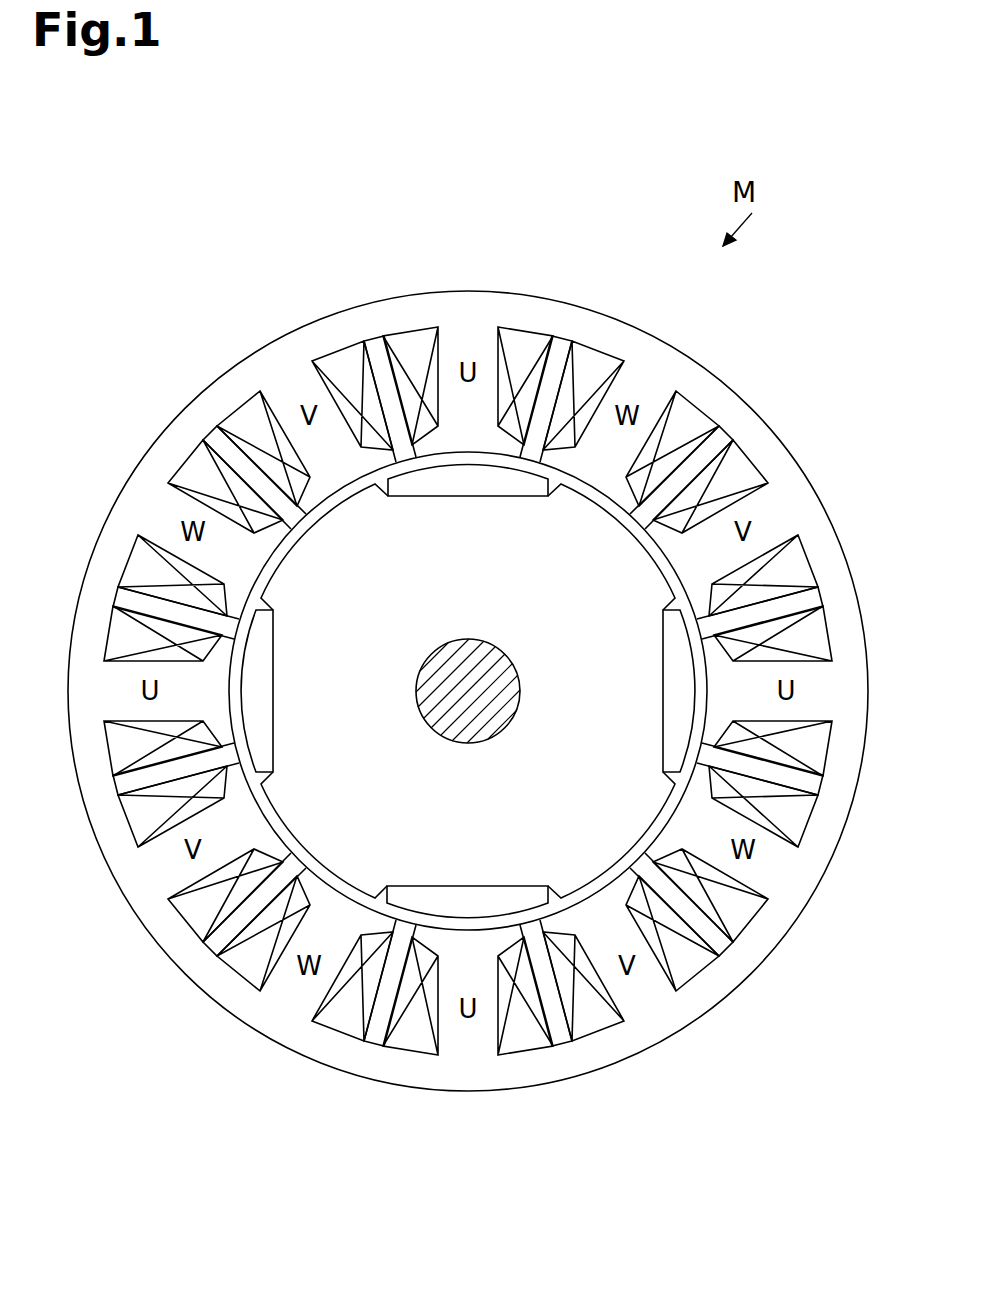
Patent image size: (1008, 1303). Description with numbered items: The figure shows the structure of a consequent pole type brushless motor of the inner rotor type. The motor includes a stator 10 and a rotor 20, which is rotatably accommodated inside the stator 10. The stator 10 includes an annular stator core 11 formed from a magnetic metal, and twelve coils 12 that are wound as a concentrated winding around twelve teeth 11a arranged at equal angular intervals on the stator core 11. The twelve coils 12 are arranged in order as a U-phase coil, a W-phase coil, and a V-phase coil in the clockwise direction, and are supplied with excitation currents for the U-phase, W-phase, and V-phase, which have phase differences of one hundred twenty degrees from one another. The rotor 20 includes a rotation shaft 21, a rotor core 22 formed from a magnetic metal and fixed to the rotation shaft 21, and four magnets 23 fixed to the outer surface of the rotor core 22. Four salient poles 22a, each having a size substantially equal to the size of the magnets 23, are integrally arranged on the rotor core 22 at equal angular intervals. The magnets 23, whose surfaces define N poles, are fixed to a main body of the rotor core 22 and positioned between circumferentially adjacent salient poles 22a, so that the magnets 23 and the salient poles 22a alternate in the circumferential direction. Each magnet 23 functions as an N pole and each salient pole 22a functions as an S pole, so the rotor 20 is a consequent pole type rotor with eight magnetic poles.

The stator 10 is at (716, 374).
The stator core 11 is at (567, 305).
The teeth 11a is at (598, 410).
The coils 12 is at (797, 558).
The rotor 20 is at (630, 525).
The rotation shaft 21 is at (472, 650).
The rotor core 22 is at (672, 566).
The salient poles 22a is at (577, 507).
The magnets 23 is at (250, 690).